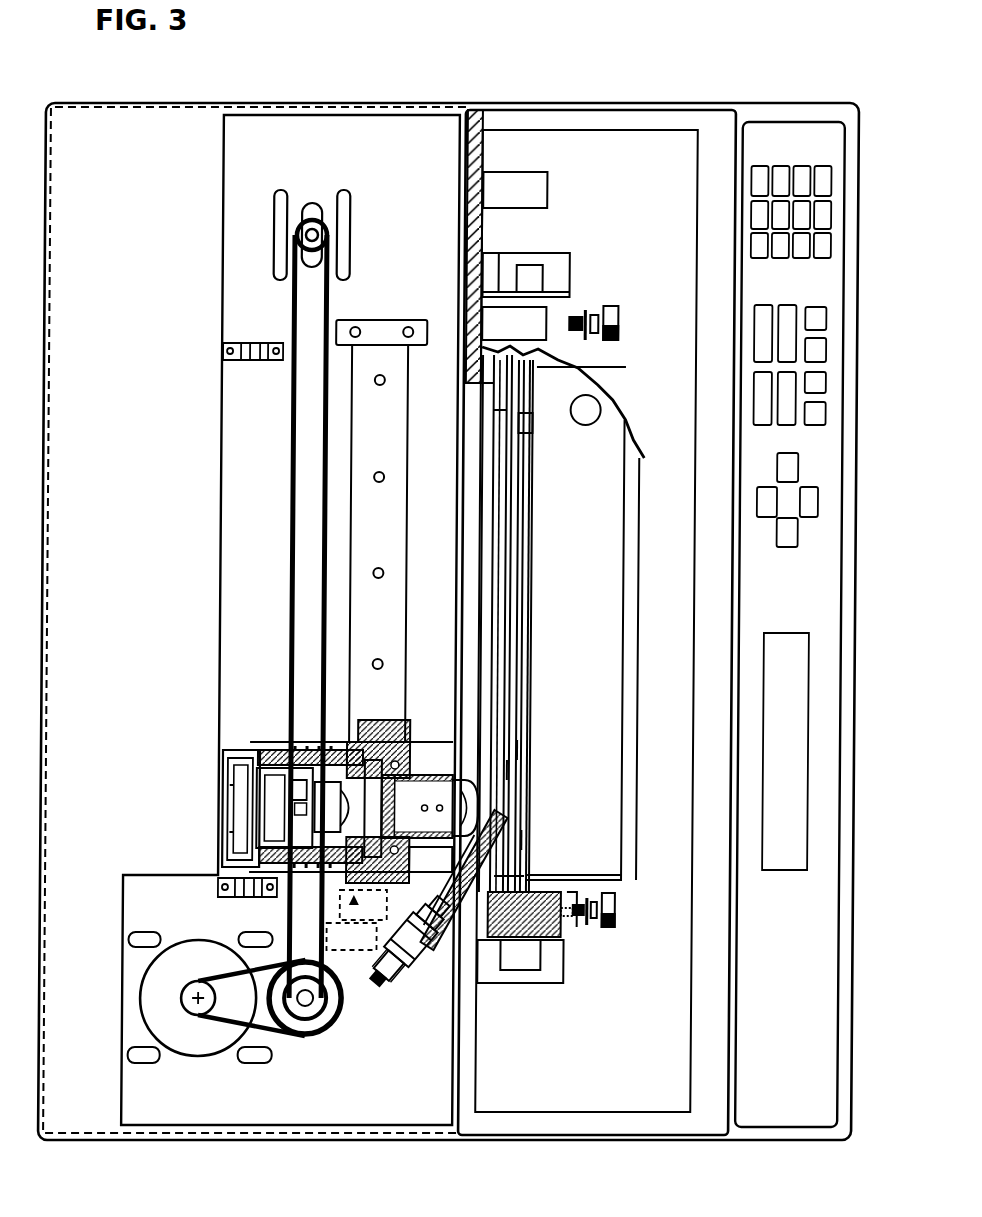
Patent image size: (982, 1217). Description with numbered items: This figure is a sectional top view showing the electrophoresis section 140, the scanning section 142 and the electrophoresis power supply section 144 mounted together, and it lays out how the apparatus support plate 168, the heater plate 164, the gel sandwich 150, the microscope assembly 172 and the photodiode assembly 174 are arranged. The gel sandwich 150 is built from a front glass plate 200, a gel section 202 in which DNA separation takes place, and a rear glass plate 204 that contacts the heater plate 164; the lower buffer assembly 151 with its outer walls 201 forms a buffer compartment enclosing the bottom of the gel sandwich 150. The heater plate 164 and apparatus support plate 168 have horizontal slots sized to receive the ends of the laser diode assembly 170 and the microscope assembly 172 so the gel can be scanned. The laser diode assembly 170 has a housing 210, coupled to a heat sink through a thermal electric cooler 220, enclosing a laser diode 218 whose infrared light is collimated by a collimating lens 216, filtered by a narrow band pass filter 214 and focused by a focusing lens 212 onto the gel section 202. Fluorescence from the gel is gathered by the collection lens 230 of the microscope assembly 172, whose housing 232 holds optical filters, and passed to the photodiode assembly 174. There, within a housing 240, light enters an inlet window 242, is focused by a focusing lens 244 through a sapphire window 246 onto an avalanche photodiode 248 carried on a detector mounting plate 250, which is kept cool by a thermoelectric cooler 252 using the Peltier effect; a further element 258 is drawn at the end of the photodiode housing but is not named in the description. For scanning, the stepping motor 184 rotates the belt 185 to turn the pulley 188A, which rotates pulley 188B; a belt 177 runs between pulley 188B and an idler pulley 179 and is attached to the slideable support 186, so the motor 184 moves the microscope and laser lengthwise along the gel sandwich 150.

The electrophoresis section 140 is at (568, 297).
The scanning section 142 is at (432, 725).
The electrophoresis power supply section 144 is at (120, 1092).
The gel sandwich 150 is at (522, 590).
The lower buffer assembly 151 is at (630, 895).
The heater plate 164 is at (502, 668).
The apparatus support plate 168 is at (470, 258).
The laser diode assembly 170 is at (424, 1010).
The microscope assembly 172 is at (391, 712).
The photodiode assembly 174 is at (303, 878).
The belt 177 is at (292, 498).
The idler pulley 179 is at (330, 231).
The stepping motor 184 is at (195, 960).
The belt 185 is at (230, 1025).
The slideable support 186 is at (395, 445).
The pulley 188A is at (312, 1048).
The pulley 188B is at (311, 1040).
The front glass plate 200 is at (532, 497).
The outer walls 201 is at (527, 838).
The gel section 202 is at (522, 750).
The rear glass plate 204 is at (512, 772).
The housing 210 is at (420, 965).
The focusing lens 212 is at (430, 859).
The narrow band pass filter 214 is at (480, 990).
The collimating lens 216 is at (472, 1005).
The laser diode 218 is at (320, 1010).
The thermal electric cooler 220 is at (500, 880).
The collection lens 230 is at (462, 812).
The housing 232 is at (353, 720).
The housing 240 is at (300, 745).
The inlet window 242 is at (416, 806).
The focusing lens 244 is at (328, 817).
The sapphire window 246 is at (315, 745).
The avalanche photodiode 248 is at (327, 785).
The detector mounting plate 250 is at (235, 778).
The thermoelectric cooler 252 is at (232, 760).
The housing inner plate 258 is at (240, 805).